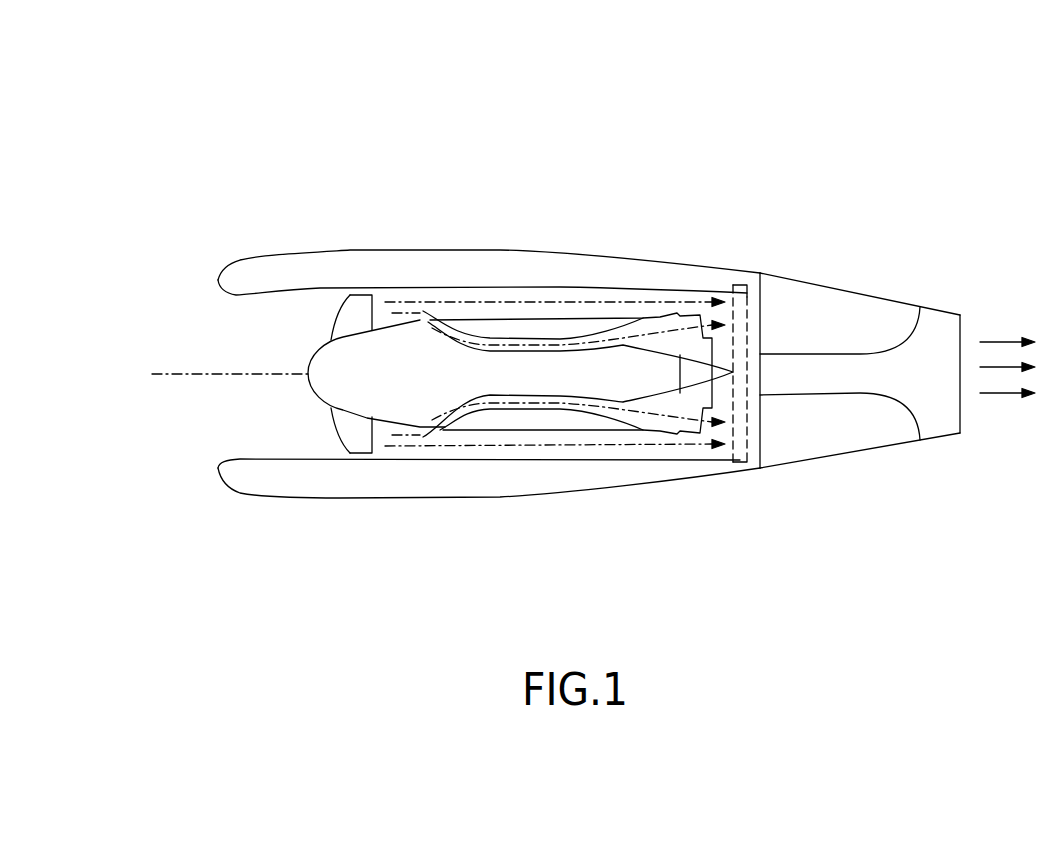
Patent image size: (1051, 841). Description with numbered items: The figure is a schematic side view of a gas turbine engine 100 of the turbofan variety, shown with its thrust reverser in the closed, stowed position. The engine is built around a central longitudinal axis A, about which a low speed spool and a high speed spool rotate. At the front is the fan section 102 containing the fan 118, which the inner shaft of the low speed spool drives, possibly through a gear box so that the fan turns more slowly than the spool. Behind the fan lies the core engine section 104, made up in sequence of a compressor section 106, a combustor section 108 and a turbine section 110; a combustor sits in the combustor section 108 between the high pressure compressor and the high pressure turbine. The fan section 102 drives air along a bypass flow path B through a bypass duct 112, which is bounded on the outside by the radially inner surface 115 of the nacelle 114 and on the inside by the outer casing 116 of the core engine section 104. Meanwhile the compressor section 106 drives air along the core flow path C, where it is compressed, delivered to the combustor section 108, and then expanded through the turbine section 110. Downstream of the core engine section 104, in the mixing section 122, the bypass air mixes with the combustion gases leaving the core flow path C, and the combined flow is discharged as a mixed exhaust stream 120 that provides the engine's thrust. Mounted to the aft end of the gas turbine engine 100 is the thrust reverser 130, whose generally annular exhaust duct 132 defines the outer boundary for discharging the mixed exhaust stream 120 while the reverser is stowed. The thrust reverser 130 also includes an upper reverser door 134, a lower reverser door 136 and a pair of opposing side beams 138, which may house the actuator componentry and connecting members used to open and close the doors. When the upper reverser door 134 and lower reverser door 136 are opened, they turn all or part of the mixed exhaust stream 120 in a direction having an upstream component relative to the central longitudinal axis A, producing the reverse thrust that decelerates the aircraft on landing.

The gas turbine engine 100 is at (345, 108).
The fan section 102 is at (287, 321).
The core engine section 104 is at (435, 335).
The compressor section 106 is at (472, 305).
The combustor section 108 is at (571, 305).
The turbine section 110 is at (659, 286).
The bypass duct 112 is at (472, 458).
The nacelle 114 is at (322, 480).
The radially inner surface 115 is at (518, 462).
The outer casing 116 is at (563, 432).
The fan 118 is at (340, 438).
The mixed exhaust stream 120 is at (995, 340).
The mixing section 122 is at (735, 270).
The thrust reverser 130 is at (848, 232).
The annular exhaust duct 132 is at (953, 436).
The upper reverser door 134 is at (867, 292).
The lower reverser door 136 is at (825, 464).
The side beams 138 is at (785, 396).
The central longitudinal axis A is at (233, 378).
The bypass flow path B is at (420, 448).
The core flow path C is at (670, 416).